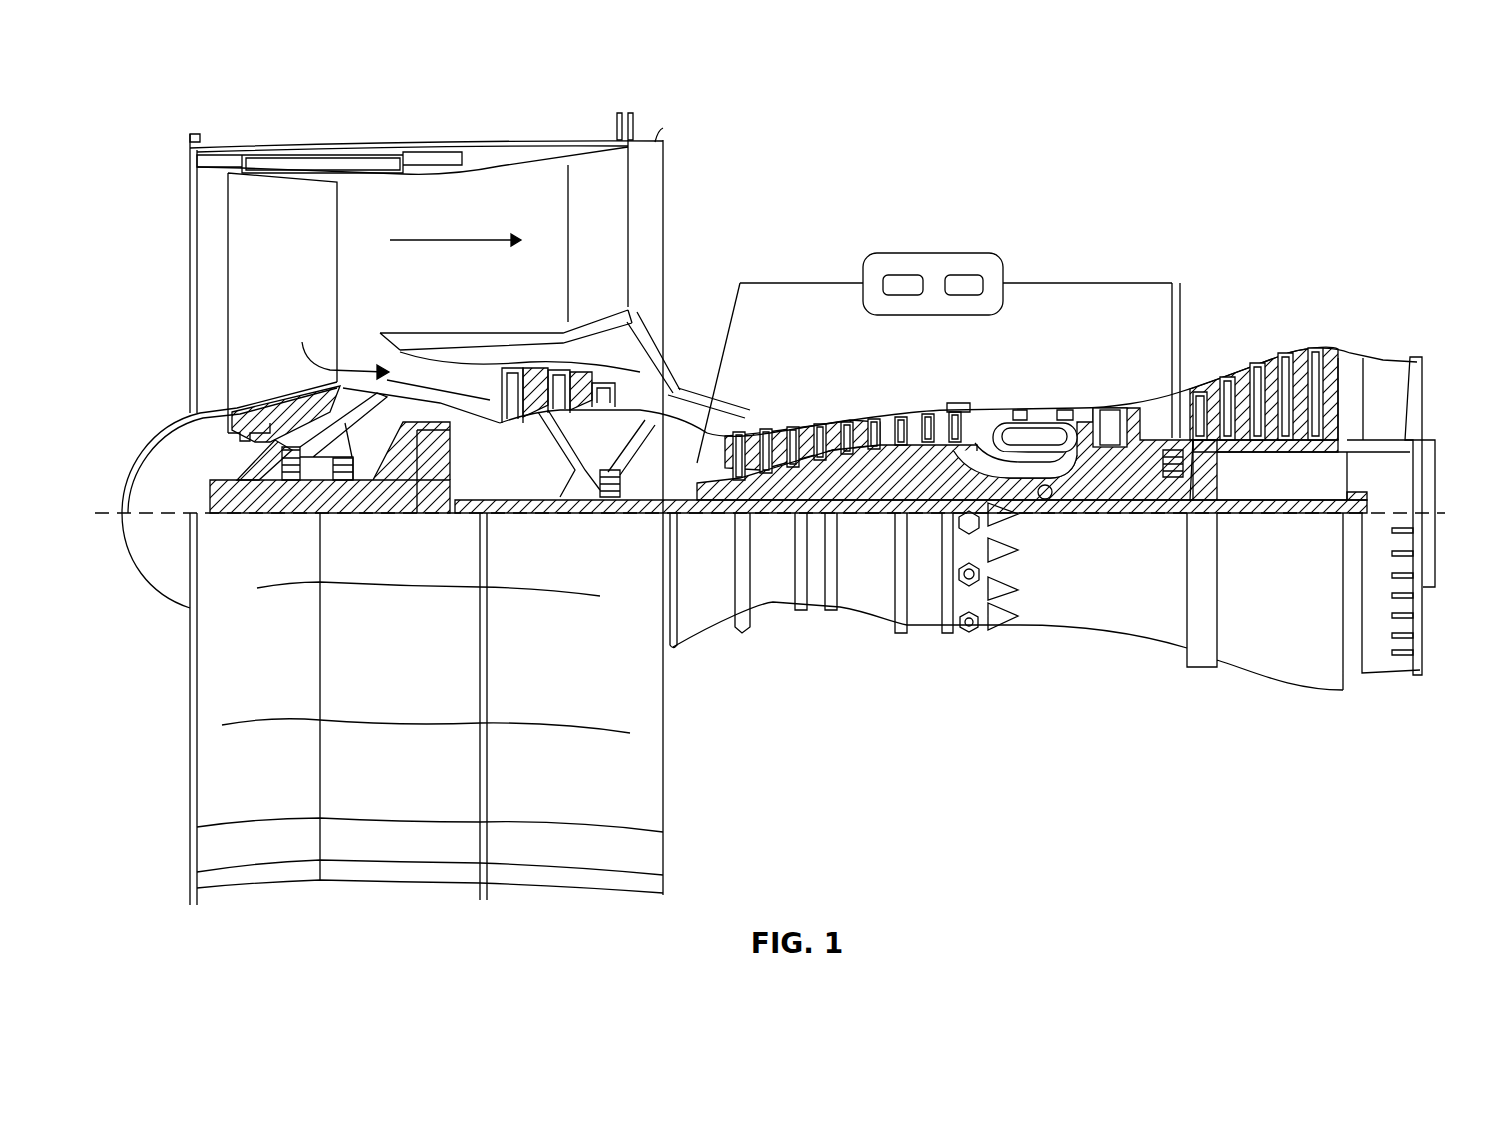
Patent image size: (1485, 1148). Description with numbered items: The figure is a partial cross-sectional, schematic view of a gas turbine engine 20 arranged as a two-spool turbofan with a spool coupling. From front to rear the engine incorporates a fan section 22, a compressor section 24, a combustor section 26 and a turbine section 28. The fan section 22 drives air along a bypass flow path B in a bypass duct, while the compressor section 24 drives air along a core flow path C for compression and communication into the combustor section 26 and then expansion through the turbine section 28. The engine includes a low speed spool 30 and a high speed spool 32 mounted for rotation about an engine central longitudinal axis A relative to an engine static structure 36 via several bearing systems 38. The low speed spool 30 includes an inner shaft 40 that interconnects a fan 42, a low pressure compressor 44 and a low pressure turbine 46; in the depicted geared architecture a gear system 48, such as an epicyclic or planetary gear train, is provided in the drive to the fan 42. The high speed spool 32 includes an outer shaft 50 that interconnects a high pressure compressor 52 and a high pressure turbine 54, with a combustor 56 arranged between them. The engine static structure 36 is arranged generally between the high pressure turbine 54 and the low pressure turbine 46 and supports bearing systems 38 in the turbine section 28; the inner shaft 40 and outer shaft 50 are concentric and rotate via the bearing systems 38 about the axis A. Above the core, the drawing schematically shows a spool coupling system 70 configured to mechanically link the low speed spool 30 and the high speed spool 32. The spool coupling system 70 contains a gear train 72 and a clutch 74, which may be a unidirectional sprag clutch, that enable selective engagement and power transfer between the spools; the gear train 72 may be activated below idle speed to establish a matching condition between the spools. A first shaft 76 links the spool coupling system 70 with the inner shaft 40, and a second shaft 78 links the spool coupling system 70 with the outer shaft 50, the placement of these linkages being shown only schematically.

The gas turbine engine 20 is at (1238, 170).
The fan section 22 is at (396, 107).
The compressor section 24 is at (833, 278).
The combustor section 26 is at (1028, 278).
The turbine section 28 is at (1181, 273).
The low speed spool 30 is at (890, 527).
The high speed spool 32 is at (940, 467).
The engine static structure 36 is at (926, 637).
The bearing systems 38 is at (290, 462).
The inner shaft 40 is at (683, 505).
The fan 42 is at (304, 264).
The low pressure compressor 44 is at (580, 390).
The low pressure turbine 46 is at (1272, 370).
The gear system 48 is at (430, 482).
The outer shaft 50 is at (1050, 514).
The high pressure compressor 52 is at (822, 470).
The high pressure turbine 54 is at (1107, 404).
The combustor 56 is at (1031, 426).
The spool coupling system 70 is at (926, 254).
The gear train 72 is at (905, 276).
The clutch 74 is at (966, 276).
The first shaft 76 is at (745, 283).
The second shaft 78 is at (1183, 363).
The engine central longitudinal axis A is at (1441, 511).
The bypass flow path B is at (456, 240).
The core flow path C is at (340, 347).